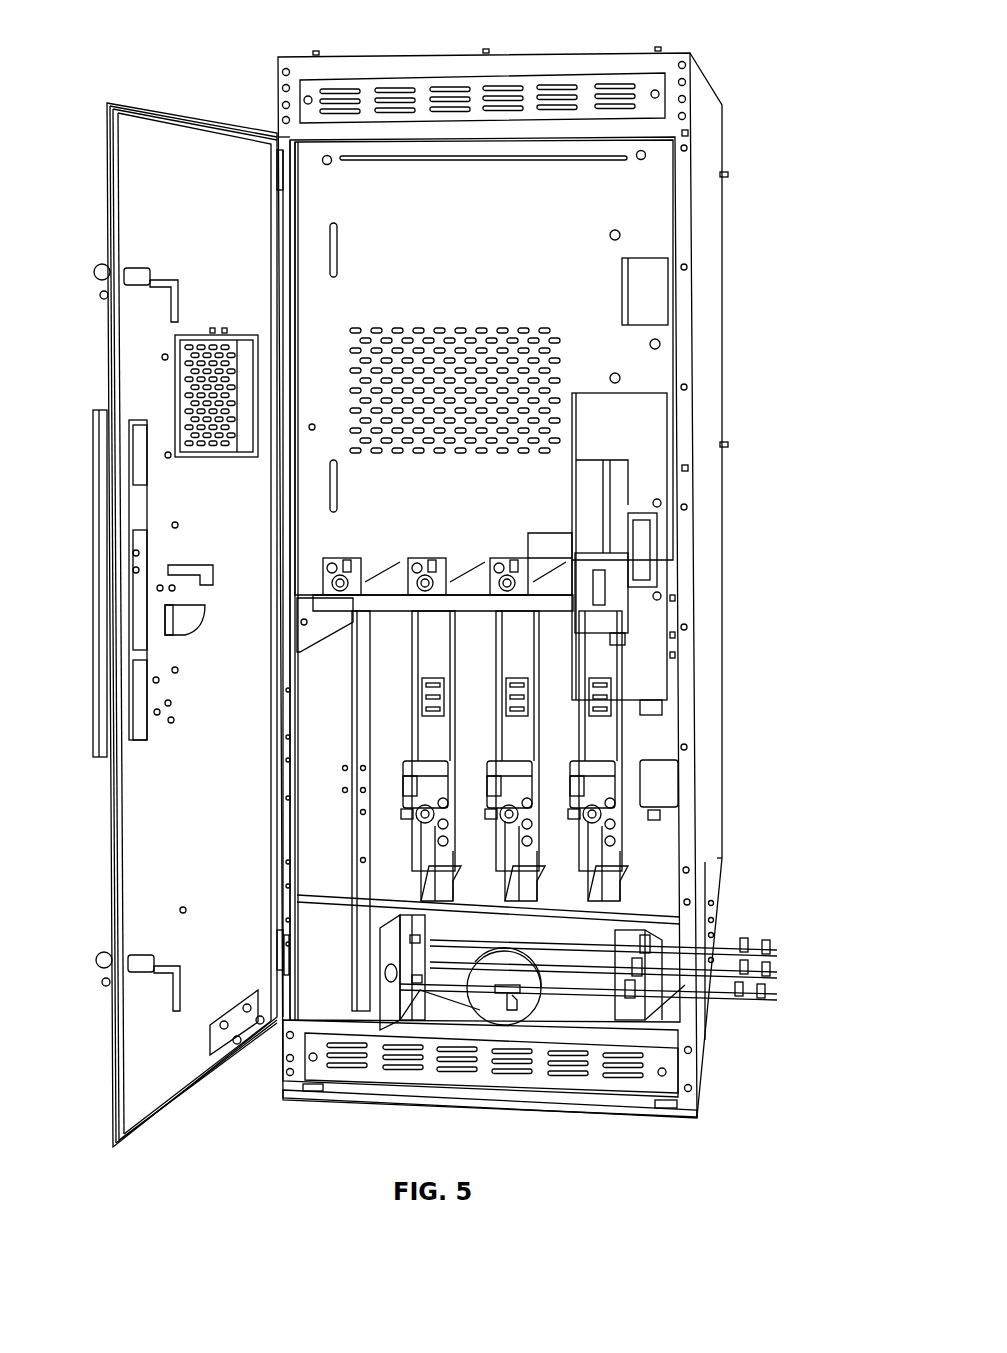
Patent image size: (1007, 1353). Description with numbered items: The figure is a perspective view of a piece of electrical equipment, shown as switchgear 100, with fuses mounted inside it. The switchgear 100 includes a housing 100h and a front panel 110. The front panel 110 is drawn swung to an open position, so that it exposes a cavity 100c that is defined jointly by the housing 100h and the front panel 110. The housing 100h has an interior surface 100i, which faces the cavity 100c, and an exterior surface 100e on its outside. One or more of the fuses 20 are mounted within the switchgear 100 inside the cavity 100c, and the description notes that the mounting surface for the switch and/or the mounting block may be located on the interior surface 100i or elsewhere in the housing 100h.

The switchgear 100 is at (762, 54).
The exterior surface 100e is at (722, 244).
The housing 100h is at (717, 410).
The interior surface 100i is at (298, 797).
The front panel 110 is at (135, 840).
The fuse 20 is at (518, 735).
The cavity 100c is at (389, 863).